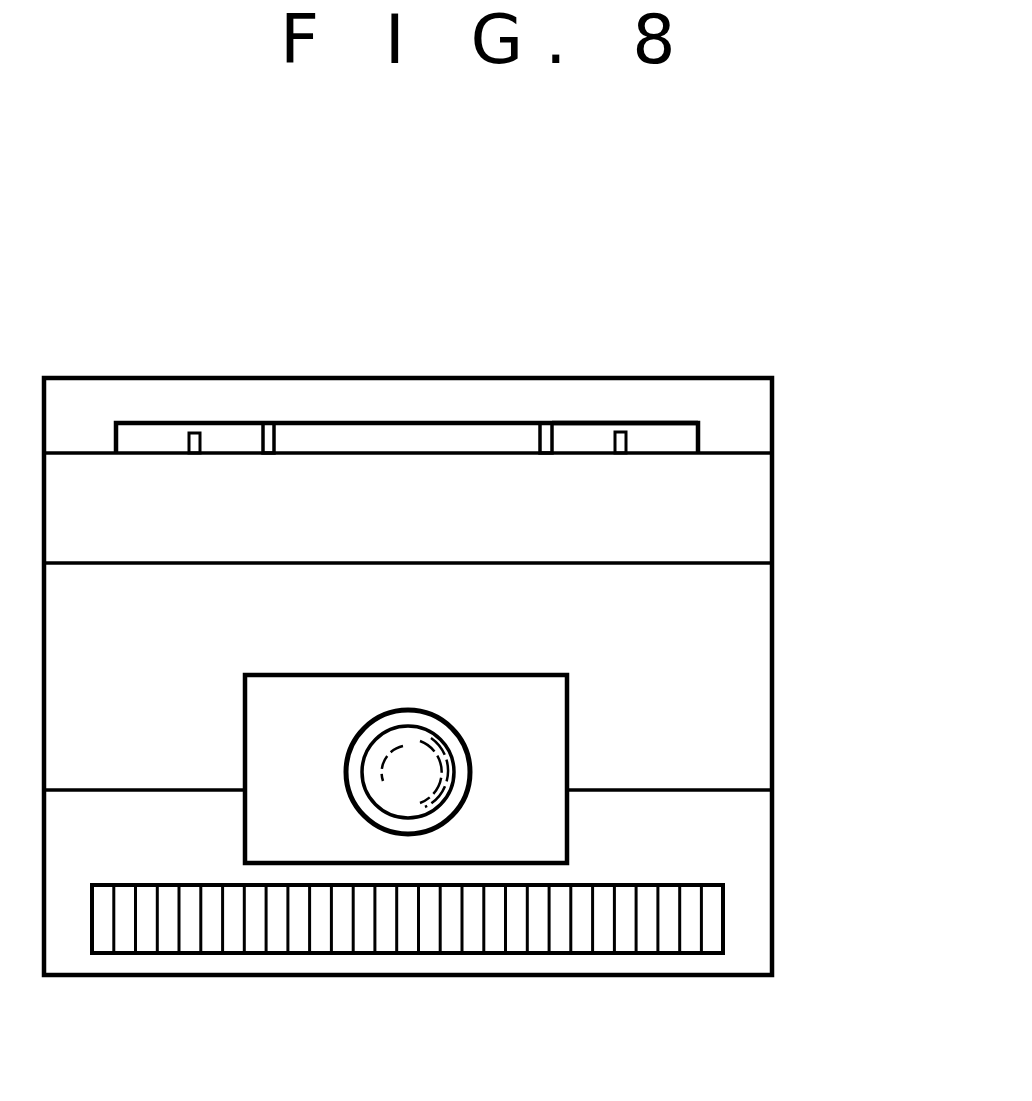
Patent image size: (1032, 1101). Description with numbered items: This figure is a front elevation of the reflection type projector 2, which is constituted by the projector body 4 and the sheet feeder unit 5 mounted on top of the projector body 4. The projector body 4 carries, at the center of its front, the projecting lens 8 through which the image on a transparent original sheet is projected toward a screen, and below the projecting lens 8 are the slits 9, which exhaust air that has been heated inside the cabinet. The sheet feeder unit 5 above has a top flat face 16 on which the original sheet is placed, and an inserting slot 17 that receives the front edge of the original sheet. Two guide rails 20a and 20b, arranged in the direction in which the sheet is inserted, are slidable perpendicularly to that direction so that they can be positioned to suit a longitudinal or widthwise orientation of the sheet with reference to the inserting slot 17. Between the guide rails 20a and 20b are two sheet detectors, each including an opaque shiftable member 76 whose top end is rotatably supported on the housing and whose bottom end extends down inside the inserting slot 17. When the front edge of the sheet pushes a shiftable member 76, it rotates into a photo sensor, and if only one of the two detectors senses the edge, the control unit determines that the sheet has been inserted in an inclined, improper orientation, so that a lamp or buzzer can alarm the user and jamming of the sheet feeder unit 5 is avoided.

The projector 2 is at (857, 387).
The projector body 4 is at (733, 643).
The sheet feeder unit 5 is at (752, 420).
The projecting lens 8 is at (422, 742).
The slits 9 is at (497, 935).
The top flat face 16 is at (401, 450).
The inserting slot 17 is at (660, 424).
The guide rail 20a is at (615, 440).
The guide rail 20b is at (190, 440).
The shiftable member 76 is at (268, 433).